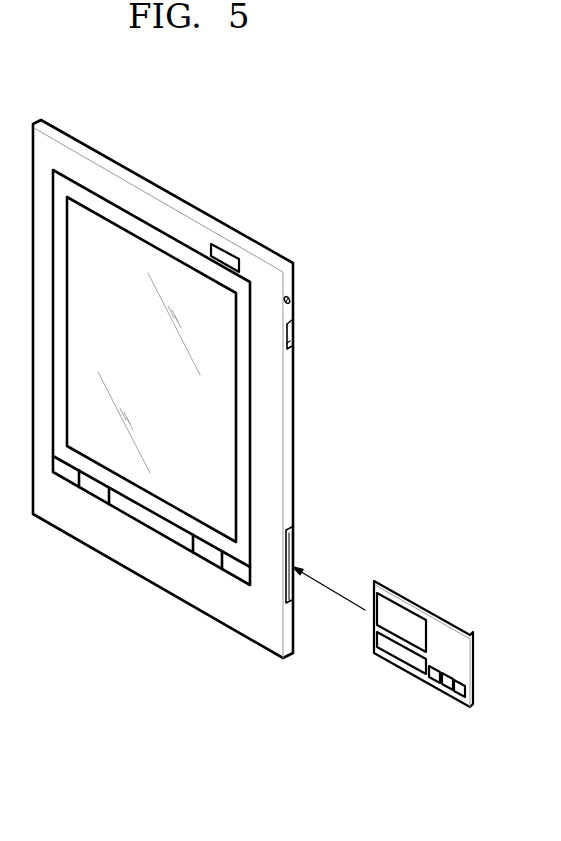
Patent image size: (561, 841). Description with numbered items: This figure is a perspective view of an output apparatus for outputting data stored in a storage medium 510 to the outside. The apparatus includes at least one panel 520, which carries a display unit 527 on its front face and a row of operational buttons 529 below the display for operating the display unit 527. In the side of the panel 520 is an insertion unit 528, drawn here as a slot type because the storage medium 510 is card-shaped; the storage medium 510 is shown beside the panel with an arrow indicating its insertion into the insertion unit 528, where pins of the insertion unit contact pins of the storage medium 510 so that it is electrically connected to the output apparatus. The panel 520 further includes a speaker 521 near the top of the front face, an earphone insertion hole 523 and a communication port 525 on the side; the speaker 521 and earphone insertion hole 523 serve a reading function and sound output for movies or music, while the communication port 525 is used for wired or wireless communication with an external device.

The storage medium 510 is at (432, 685).
The panel 520 is at (149, 187).
The speaker 521 is at (223, 253).
The earphone insertion hole 523 is at (291, 299).
The communication port 525 is at (292, 336).
The display unit 527 is at (221, 421).
The insertion unit 528 is at (292, 596).
The operational buttons 529 is at (153, 519).